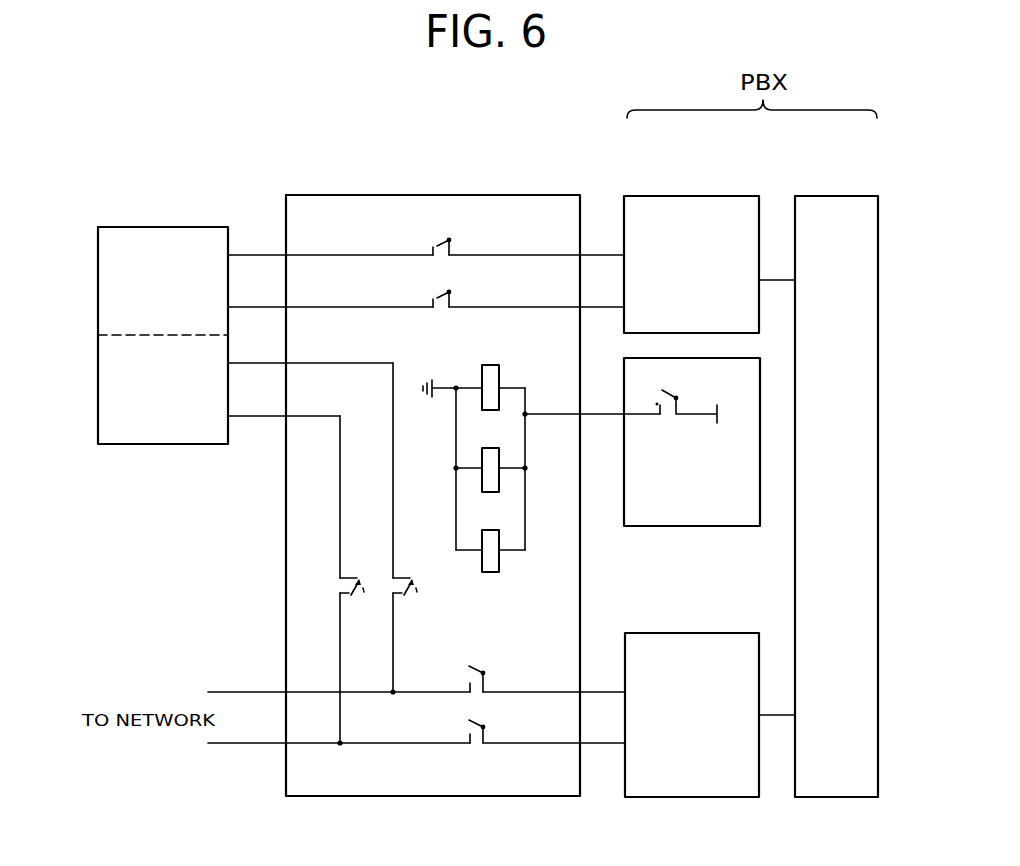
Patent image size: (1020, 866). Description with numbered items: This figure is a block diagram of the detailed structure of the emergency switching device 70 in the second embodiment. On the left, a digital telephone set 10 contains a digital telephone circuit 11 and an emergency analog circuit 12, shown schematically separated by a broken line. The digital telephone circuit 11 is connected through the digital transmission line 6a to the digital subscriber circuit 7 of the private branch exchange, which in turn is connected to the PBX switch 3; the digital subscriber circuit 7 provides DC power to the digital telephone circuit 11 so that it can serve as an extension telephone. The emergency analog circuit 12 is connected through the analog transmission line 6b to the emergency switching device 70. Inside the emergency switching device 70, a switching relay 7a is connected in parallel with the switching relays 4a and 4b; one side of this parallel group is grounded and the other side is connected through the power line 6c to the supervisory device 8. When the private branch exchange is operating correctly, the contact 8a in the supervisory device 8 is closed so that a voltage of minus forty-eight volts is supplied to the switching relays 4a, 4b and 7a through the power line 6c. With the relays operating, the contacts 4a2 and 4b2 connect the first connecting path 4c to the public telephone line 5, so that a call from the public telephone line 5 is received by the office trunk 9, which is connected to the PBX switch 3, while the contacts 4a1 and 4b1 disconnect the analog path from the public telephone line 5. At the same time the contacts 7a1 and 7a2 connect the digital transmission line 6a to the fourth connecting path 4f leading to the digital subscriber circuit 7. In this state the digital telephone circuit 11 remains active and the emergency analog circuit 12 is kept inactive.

The digital telephone set 10 is at (139, 302).
The digital telephone circuit 11 is at (98, 277).
The emergency analog circuit 12 is at (98, 380).
The emergency switching device 70 is at (470, 195).
The digital transmission line 6a is at (257, 321).
The analog transmission line 6b is at (257, 345).
The power line 6c is at (600, 413).
The digital subscriber circuit 7 is at (688, 196).
The switching relay 7a is at (499, 560).
The contact 7a1 is at (434, 243).
The contact 7a2 is at (434, 296).
The PBX switch 3 is at (836, 196).
The supervisory device 8 is at (692, 464).
The contact 8a is at (677, 397).
The office trunk 9 is at (720, 633).
The switching relay 4a is at (499, 377).
The switching relay 4b is at (495, 448).
The contact 4a1 is at (419, 589).
The contact 4b1 is at (366, 589).
The contact 4a2 is at (484, 672).
The contact 4b2 is at (469, 723).
The first connecting path 4c is at (535, 677).
The fourth connecting path 4f is at (509, 322).
The public telephone line 5 is at (238, 762).